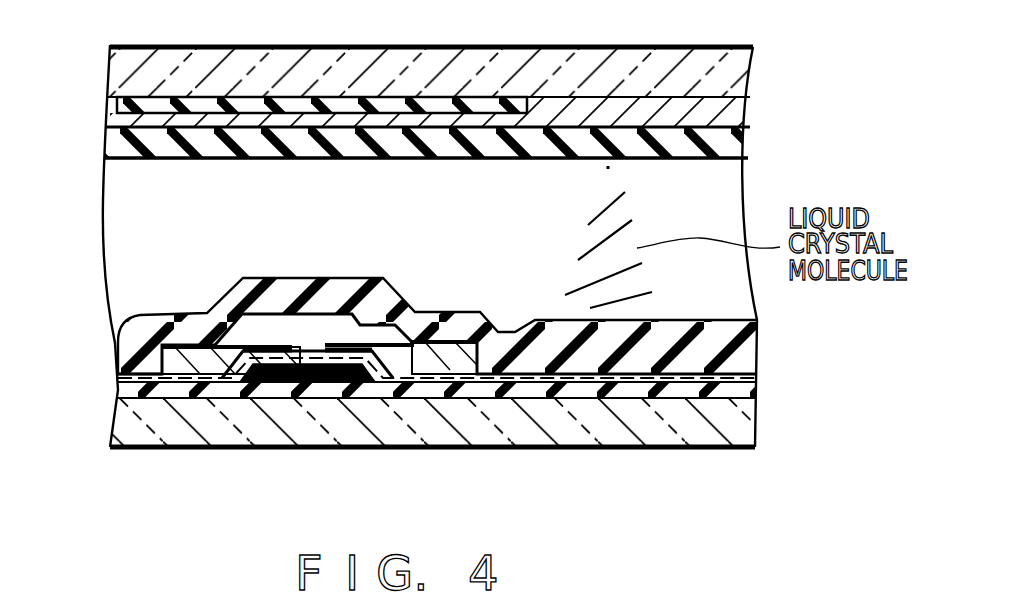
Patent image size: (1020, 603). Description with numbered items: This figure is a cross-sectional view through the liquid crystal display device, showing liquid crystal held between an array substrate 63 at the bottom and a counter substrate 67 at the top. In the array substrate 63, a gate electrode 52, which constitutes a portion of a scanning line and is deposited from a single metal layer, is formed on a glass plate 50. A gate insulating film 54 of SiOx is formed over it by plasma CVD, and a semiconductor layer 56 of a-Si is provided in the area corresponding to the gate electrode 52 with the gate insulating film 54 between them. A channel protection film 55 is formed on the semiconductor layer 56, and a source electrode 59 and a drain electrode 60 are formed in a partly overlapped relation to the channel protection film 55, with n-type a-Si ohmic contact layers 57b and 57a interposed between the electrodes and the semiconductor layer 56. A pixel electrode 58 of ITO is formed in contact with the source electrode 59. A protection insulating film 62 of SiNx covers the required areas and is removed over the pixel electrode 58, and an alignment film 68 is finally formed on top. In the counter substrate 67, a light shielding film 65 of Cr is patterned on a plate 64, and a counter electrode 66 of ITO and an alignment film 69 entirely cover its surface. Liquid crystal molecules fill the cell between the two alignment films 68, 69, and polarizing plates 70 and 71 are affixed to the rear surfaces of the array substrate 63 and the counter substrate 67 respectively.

The glass plate 50 is at (755, 420).
The gate electrode 52 is at (322, 375).
The gate insulating film 54 is at (755, 392).
The channel protection film 55 is at (305, 378).
The semiconductor layer 56 is at (372, 356).
The ohmic contact layer 57a is at (232, 355).
The ohmic contact layer 57b is at (400, 352).
The pixel electrode 58 is at (757, 377).
The source electrode 59 is at (455, 368).
The drain electrode 60 is at (175, 367).
The protection insulating film 62 is at (118, 352).
The array substrate 63 is at (98, 423).
The plate 64 is at (123, 80).
The light shielding film 65 is at (116, 108).
The counter electrode 66 is at (730, 108).
The counter substrate 67 is at (86, 50).
The alignment film 68 is at (753, 347).
The alignment film 69 is at (745, 137).
The polarizing plate 70 is at (755, 447).
The polarizing plate 71 is at (755, 48).